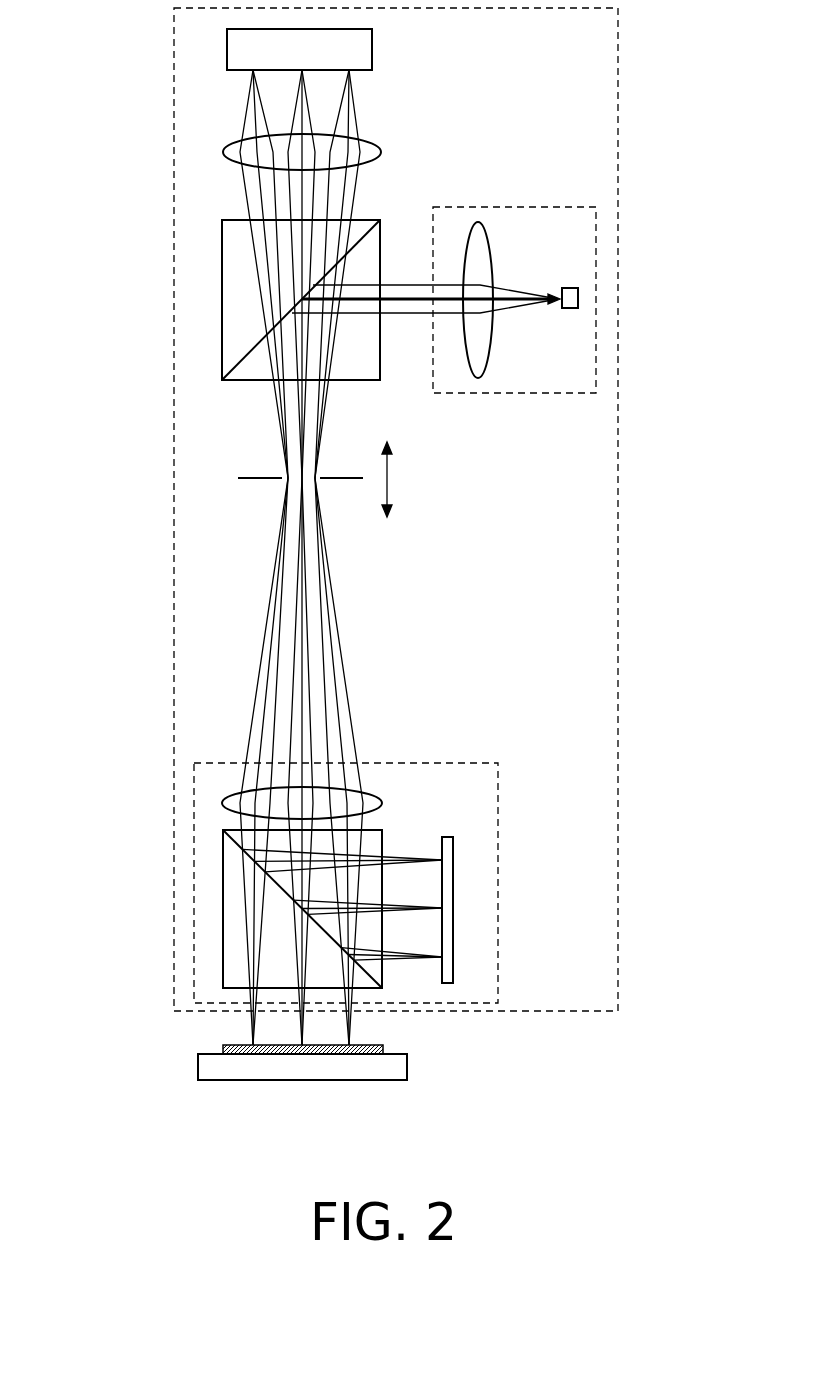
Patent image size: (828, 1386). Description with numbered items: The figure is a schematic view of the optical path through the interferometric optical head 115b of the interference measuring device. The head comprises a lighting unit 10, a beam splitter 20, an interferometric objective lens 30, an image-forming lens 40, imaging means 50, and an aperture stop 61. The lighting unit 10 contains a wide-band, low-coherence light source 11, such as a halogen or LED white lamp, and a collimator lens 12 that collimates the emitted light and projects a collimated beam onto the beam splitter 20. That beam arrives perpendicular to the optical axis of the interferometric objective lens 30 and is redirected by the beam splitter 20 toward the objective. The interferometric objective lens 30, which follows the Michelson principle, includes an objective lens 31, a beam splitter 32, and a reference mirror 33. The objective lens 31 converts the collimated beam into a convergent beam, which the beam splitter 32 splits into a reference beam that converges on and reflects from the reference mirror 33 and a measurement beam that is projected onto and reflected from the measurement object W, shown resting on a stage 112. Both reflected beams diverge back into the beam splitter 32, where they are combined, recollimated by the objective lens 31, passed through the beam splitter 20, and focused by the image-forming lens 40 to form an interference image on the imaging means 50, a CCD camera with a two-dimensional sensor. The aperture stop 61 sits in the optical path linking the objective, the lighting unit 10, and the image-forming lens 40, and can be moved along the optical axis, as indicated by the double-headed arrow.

The interferometric optical head 115b is at (618, 92).
The imaging means 50 is at (227, 48).
The image-forming lens 40 is at (223, 148).
The beam splitter 20 is at (222, 292).
The lighting unit 10 is at (596, 365).
The collimator lens 12 is at (487, 226).
The light source 11 is at (572, 284).
The aperture stop 61 is at (248, 478).
The interferometric objective lens 30 is at (194, 778).
The objective lens 31 is at (220, 805).
The beam splitter 32 is at (222, 905).
The reference mirror 33 is at (454, 872).
The measurement object W is at (222, 1050).
The substrate stage 112 is at (408, 1064).